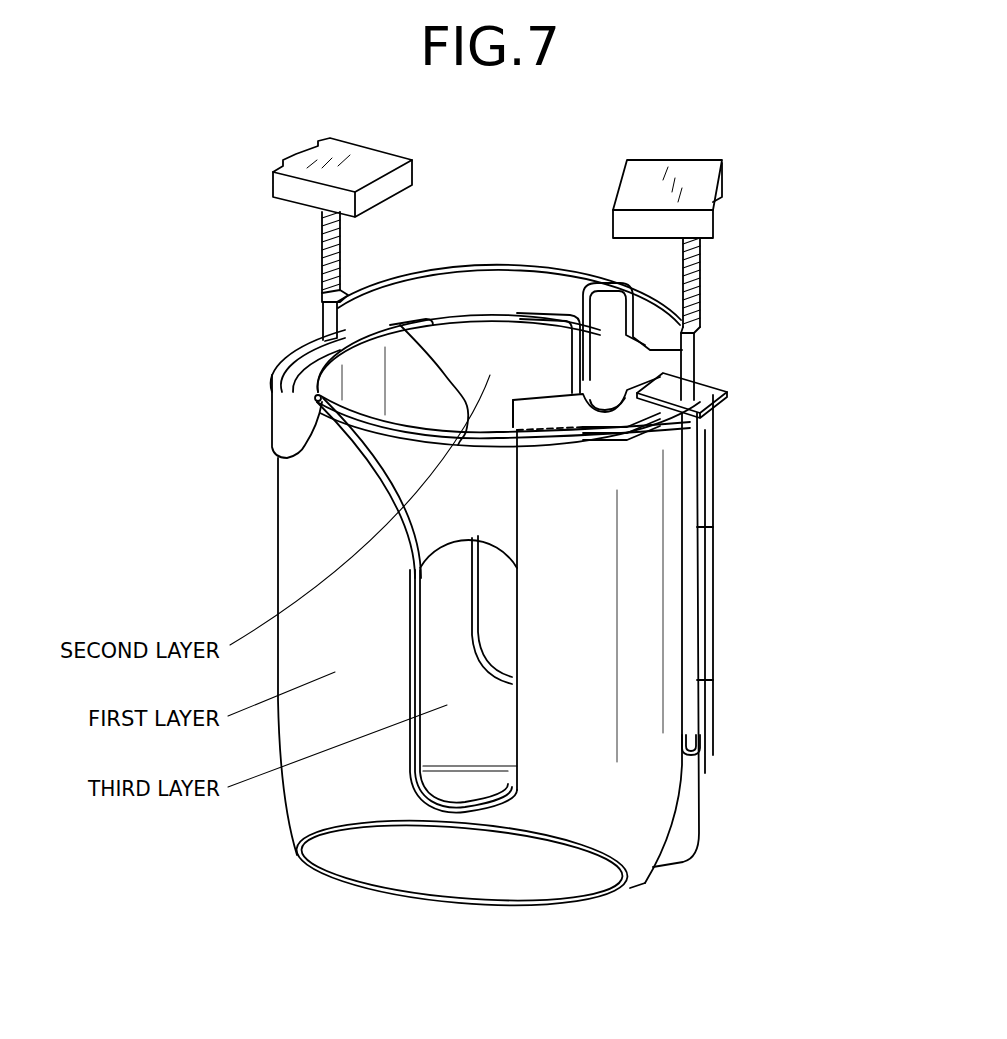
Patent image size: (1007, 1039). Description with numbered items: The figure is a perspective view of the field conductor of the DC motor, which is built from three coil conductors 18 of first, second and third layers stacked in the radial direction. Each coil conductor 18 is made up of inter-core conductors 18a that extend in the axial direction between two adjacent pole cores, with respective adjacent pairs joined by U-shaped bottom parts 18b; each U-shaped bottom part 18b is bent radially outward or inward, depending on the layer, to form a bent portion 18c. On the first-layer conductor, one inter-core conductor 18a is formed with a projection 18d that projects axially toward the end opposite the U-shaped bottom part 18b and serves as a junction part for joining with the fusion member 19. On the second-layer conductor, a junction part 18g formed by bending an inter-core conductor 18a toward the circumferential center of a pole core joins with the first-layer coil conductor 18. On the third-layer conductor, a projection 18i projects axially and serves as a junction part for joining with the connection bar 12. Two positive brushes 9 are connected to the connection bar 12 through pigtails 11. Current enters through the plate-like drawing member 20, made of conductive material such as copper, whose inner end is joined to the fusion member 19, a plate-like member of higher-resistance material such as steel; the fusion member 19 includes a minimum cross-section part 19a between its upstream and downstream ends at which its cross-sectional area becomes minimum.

The brush 9 is at (362, 160).
The pigtail 11 is at (322, 255).
The connection bar 12 is at (476, 292).
The coil conductor 18 is at (266, 526).
The inter-core conductor 18a is at (610, 645).
The U-shaped bottom part 18b is at (480, 820).
The bent portion 18c is at (287, 430).
The projection 18d is at (537, 420).
The junction part 18g is at (549, 340).
The projection 18i is at (603, 300).
The fusion member 19 is at (617, 407).
The minimum cross-section part 19a is at (595, 407).
The drawing member 20 is at (712, 385).